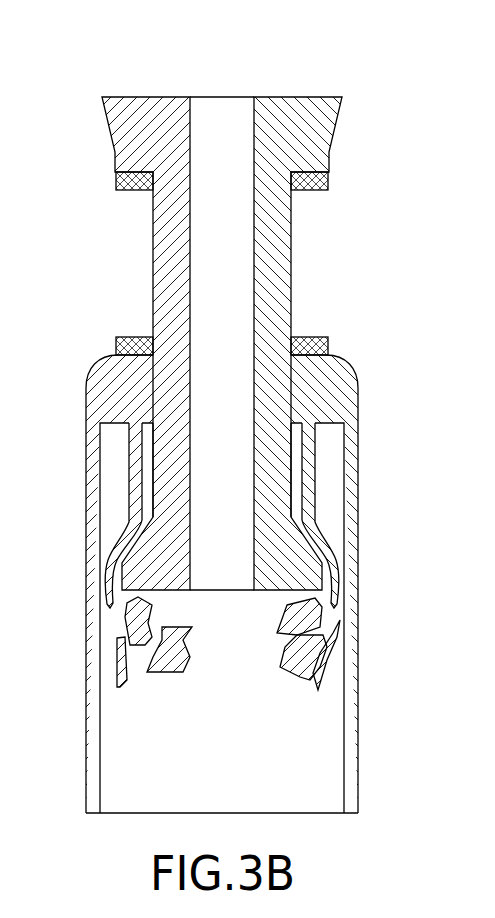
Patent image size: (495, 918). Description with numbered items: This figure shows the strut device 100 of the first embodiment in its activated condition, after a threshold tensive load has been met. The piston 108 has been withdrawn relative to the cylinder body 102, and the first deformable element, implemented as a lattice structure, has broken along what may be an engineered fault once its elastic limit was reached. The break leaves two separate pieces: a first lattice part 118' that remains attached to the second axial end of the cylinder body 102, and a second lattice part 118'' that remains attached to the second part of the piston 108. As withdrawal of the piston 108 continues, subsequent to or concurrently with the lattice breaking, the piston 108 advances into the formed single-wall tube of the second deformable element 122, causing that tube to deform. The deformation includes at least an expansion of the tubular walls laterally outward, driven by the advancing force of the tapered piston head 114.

The strut device 100 is at (279, 408).
The cylinder body 102 is at (357, 582).
The piston 108 is at (332, 133).
The tapered piston head 114 is at (316, 556).
The first lattice part 118' is at (291, 338).
The second lattice part 118'' is at (294, 194).
The second deformable element 122 is at (318, 521).